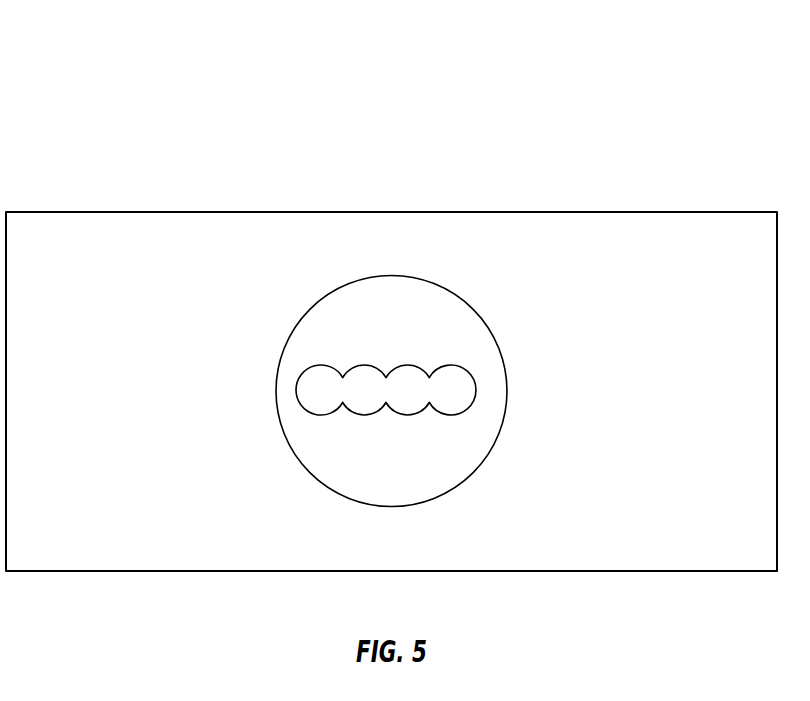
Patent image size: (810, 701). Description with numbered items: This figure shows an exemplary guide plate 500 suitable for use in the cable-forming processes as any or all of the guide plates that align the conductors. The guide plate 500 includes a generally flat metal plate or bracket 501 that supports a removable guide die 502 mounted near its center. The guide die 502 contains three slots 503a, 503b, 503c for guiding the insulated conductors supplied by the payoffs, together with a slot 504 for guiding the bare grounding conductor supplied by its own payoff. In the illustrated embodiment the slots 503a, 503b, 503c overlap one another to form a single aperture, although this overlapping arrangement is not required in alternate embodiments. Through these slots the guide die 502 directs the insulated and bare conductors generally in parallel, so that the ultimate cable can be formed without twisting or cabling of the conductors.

The guide plate 500 is at (174, 84).
The generally flat metal plate or bracket 501 is at (616, 228).
The removable guide die 502 is at (507, 390).
The slot 503a is at (320, 366).
The slot 503b is at (406, 366).
The slot 503c is at (448, 416).
The slot 504 is at (384, 390).